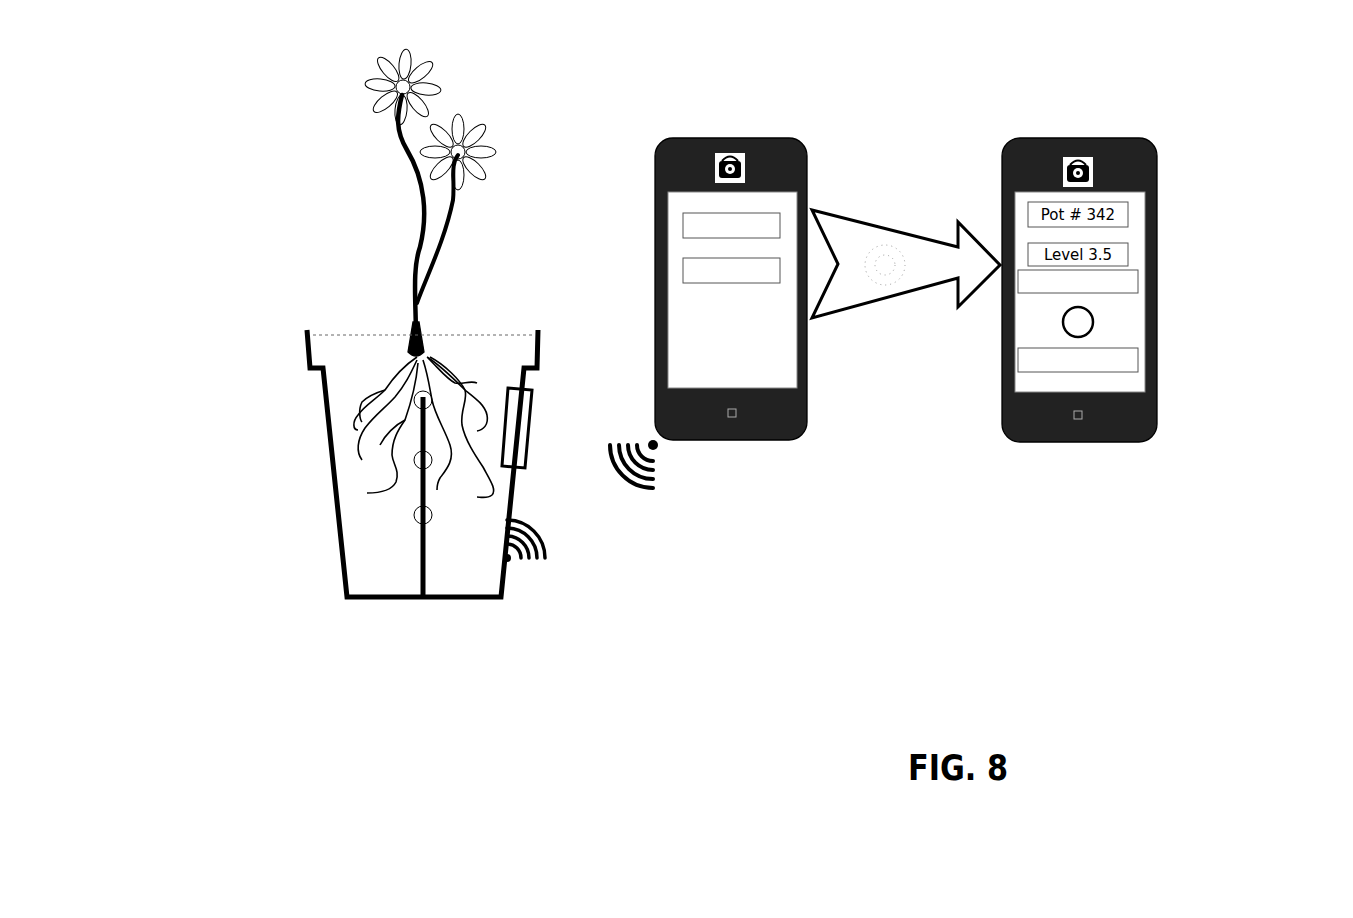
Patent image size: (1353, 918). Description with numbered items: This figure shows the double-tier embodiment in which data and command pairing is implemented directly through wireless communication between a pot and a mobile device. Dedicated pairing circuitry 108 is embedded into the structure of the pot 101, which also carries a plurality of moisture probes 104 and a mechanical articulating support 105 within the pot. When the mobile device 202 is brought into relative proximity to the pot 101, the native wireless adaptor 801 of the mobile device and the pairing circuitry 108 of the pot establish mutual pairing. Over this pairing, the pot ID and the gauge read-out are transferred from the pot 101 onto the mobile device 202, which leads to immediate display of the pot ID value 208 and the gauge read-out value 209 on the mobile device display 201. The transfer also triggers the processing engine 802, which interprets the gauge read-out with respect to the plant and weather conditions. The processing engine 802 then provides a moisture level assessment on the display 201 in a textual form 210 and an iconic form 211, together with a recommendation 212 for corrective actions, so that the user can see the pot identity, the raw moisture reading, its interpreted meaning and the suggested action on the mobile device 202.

The pot 101 is at (322, 420).
The moisture probes 104 is at (414, 518).
The mechanical articulating support 105 is at (423, 558).
The dedicated pairing circuitry 108 is at (540, 578).
The mobile device display 201 is at (680, 332).
The mobile device 202 is at (790, 138).
The pot ID display value 208 is at (685, 213).
The gauge read-out display value 209 is at (782, 268).
The textual moisture level assessment 210 is at (1141, 230).
The iconic moisture level assessment 211 is at (1093, 322).
The recommendation for corrective actions 212 is at (1080, 372).
The native wireless adaptor 801 is at (662, 480).
The processing engine 802 is at (890, 290).